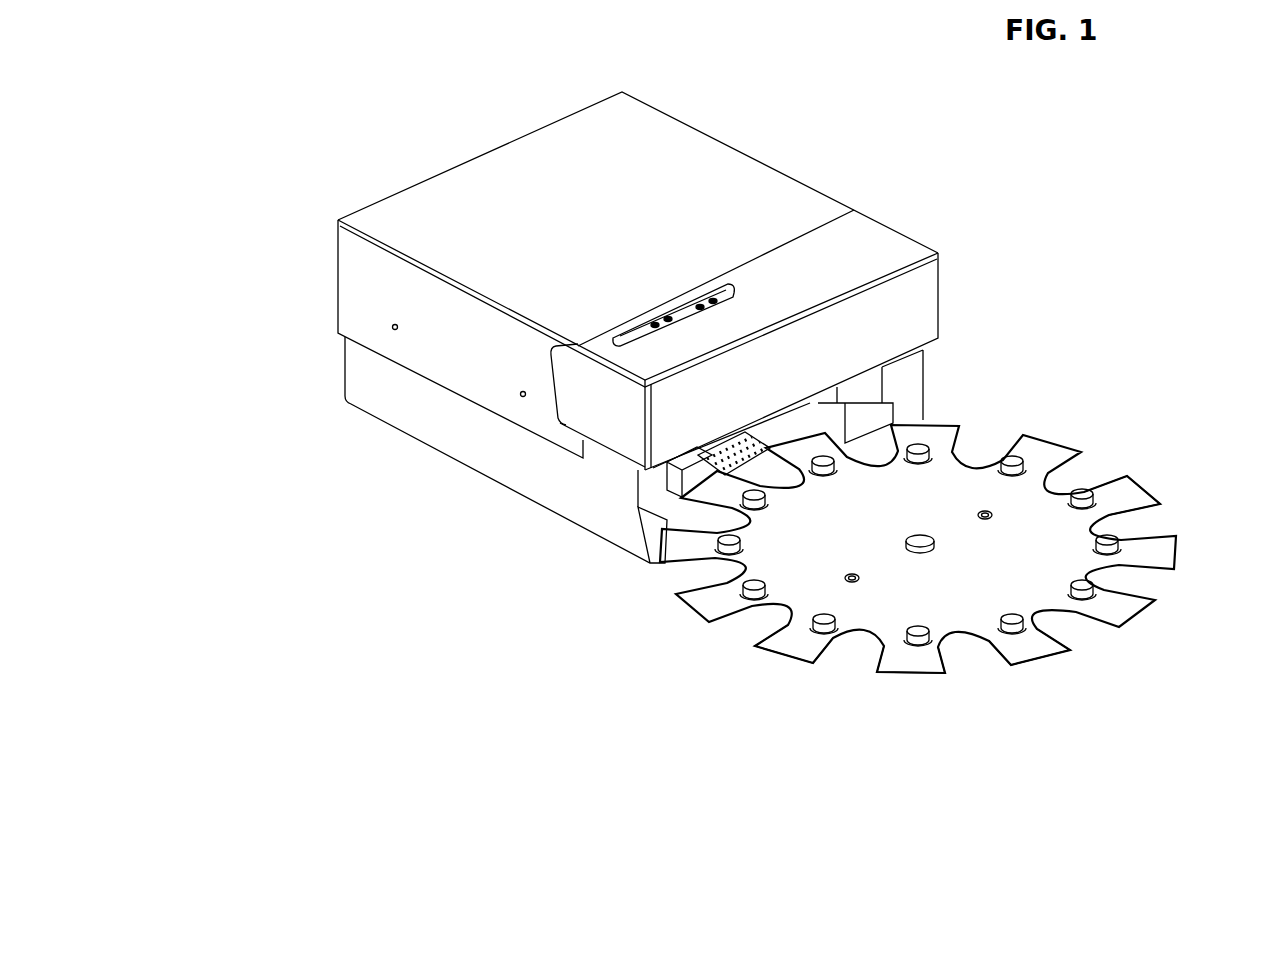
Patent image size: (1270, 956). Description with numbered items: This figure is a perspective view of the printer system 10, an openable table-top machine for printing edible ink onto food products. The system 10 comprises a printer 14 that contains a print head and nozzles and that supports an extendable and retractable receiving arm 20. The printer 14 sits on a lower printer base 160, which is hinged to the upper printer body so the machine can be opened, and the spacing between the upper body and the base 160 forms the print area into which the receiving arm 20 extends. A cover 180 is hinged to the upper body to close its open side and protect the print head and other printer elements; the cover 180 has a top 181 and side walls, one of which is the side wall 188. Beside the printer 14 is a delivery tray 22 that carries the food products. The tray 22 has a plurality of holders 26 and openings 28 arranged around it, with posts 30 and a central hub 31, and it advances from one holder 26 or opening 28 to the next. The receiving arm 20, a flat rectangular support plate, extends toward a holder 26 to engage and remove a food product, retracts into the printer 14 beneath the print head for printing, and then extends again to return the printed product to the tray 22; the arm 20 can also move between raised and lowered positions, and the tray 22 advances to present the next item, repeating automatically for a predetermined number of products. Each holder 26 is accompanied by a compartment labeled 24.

The printer system 10 is at (290, 180).
The printer 14 is at (968, 272).
The cover 180 is at (917, 217).
The top 181 is at (840, 253).
The side wall 188 is at (890, 333).
The lower printer base 160 is at (542, 460).
The receiving arm 20 is at (715, 468).
The delivery tray 22 is at (946, 556).
The sample holder 24 is at (790, 645).
The holder 26 is at (1134, 446).
The opening 28 is at (968, 657).
The posts 30 is at (1022, 628).
The central hub 31 is at (937, 516).